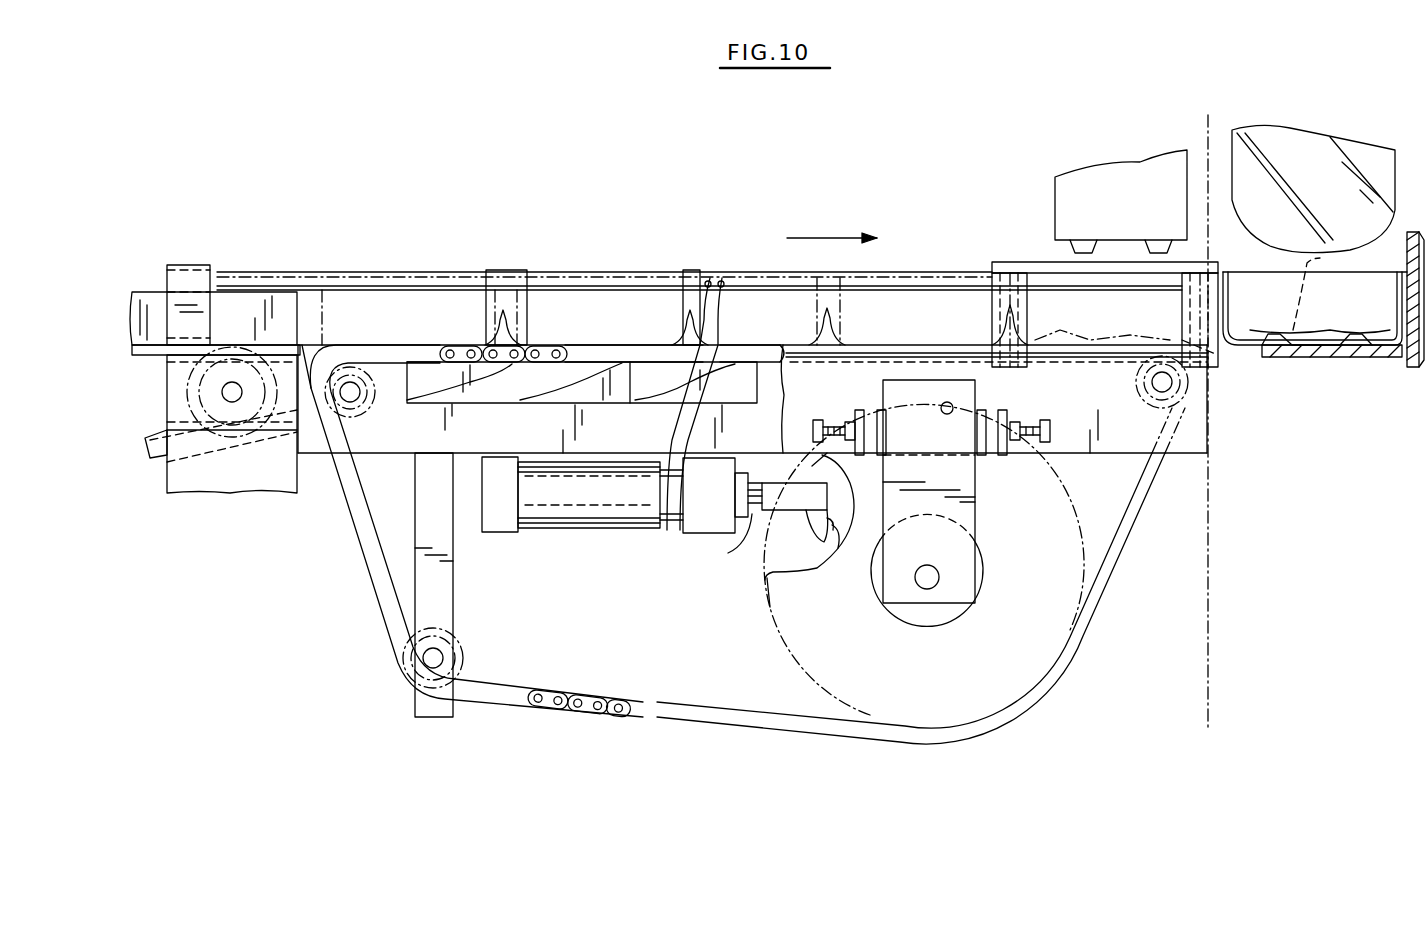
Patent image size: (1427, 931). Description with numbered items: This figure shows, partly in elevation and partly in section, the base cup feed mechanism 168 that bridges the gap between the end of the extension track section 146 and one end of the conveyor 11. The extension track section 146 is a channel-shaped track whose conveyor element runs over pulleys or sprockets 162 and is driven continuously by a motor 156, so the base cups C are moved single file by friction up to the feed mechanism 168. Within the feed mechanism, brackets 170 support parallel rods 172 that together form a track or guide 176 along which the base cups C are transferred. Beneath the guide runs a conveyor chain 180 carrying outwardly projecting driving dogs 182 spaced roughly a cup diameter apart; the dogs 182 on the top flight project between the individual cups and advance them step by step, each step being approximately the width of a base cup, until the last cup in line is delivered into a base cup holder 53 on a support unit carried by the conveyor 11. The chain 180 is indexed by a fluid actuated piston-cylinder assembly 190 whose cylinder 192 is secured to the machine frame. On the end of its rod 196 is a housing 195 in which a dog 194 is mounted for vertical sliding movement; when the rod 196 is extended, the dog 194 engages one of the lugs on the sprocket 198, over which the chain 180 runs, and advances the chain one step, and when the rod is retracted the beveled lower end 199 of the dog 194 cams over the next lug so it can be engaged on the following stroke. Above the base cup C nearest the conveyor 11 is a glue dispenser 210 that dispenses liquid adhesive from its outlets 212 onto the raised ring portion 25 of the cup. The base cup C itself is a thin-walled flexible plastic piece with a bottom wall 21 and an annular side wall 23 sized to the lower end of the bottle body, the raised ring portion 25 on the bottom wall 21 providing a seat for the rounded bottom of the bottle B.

The extension track section 146 is at (150, 292).
The motor 156 is at (152, 470).
The pulleys or sprockets 162 is at (234, 410).
The feed mechanism 168 is at (345, 532).
The brackets 170 is at (515, 266).
The parallel rods 172 is at (448, 276).
The track or guide 176 is at (310, 298).
The conveyor chain 180 is at (590, 692).
The driving dogs 182 is at (320, 357).
The fluid actuated piston-cylinder assembly 190 is at (620, 535).
The cylinder 192 is at (565, 528).
The dog 194 is at (838, 540).
The housing 195 is at (787, 485).
The rod 196 is at (750, 545).
The sprocket 198 is at (1055, 637).
The beveled lower end 199 is at (806, 528).
The glue dispenser 210 is at (1138, 168).
The outlets 212 is at (1070, 248).
The conveyor 11 is at (1180, 137).
The bag B is at (1308, 147).
The base cup C is at (1110, 326).
The raised ring portion 25 is at (1352, 330).
The base cup holder 53 is at (1322, 357).
The annular side wall 23 is at (1377, 353).
The bottom wall 21 is at (1383, 352).